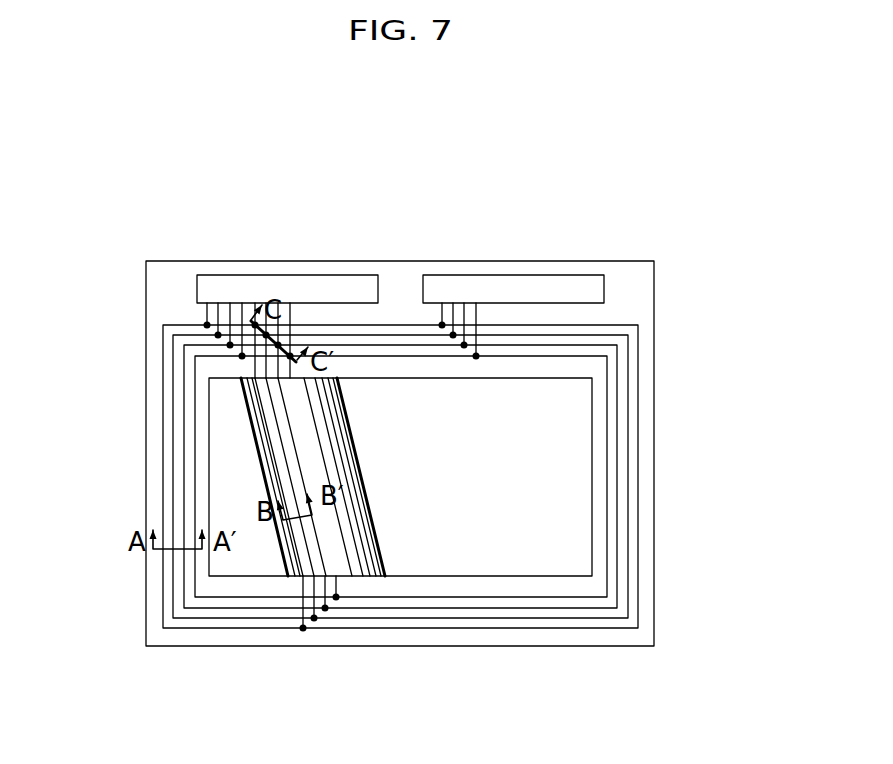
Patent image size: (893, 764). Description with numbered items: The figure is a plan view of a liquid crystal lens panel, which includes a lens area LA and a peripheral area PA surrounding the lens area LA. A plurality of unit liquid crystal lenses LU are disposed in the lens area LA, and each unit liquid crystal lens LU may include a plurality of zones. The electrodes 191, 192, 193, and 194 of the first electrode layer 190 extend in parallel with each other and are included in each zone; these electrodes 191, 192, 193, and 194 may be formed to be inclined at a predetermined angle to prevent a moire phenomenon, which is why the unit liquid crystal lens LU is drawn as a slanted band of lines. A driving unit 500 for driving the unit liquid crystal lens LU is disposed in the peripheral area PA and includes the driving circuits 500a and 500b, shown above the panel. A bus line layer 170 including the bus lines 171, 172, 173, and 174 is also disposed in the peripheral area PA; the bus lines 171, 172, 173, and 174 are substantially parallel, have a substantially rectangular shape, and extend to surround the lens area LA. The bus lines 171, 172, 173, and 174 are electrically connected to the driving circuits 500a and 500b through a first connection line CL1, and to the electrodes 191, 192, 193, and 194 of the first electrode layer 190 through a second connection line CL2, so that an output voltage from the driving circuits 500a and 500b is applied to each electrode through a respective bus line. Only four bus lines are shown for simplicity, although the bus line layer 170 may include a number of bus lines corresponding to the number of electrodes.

The driving unit 500 is at (400, 235).
The driving circuit 500a is at (250, 275).
The driving circuit 500b is at (513, 256).
The peripheral area PA is at (637, 281).
The first connection line CL1 is at (206, 310).
The second connection line CL2 is at (254, 366).
The bus line layer 170 is at (472, 476).
The bus line 171 is at (638, 368).
The bus line 172 is at (627, 402).
The bus line 173 is at (617, 433).
The bus line 174 is at (726, 362).
The first electrode layer 190 is at (169, 477).
The electrode 191 is at (277, 403).
The electrode 192 is at (267, 480).
The electrode 193 is at (270, 455).
The electrode 194 is at (273, 425).
The lens area LA is at (566, 510).
The unit liquid crystal lens LU is at (225, 477).